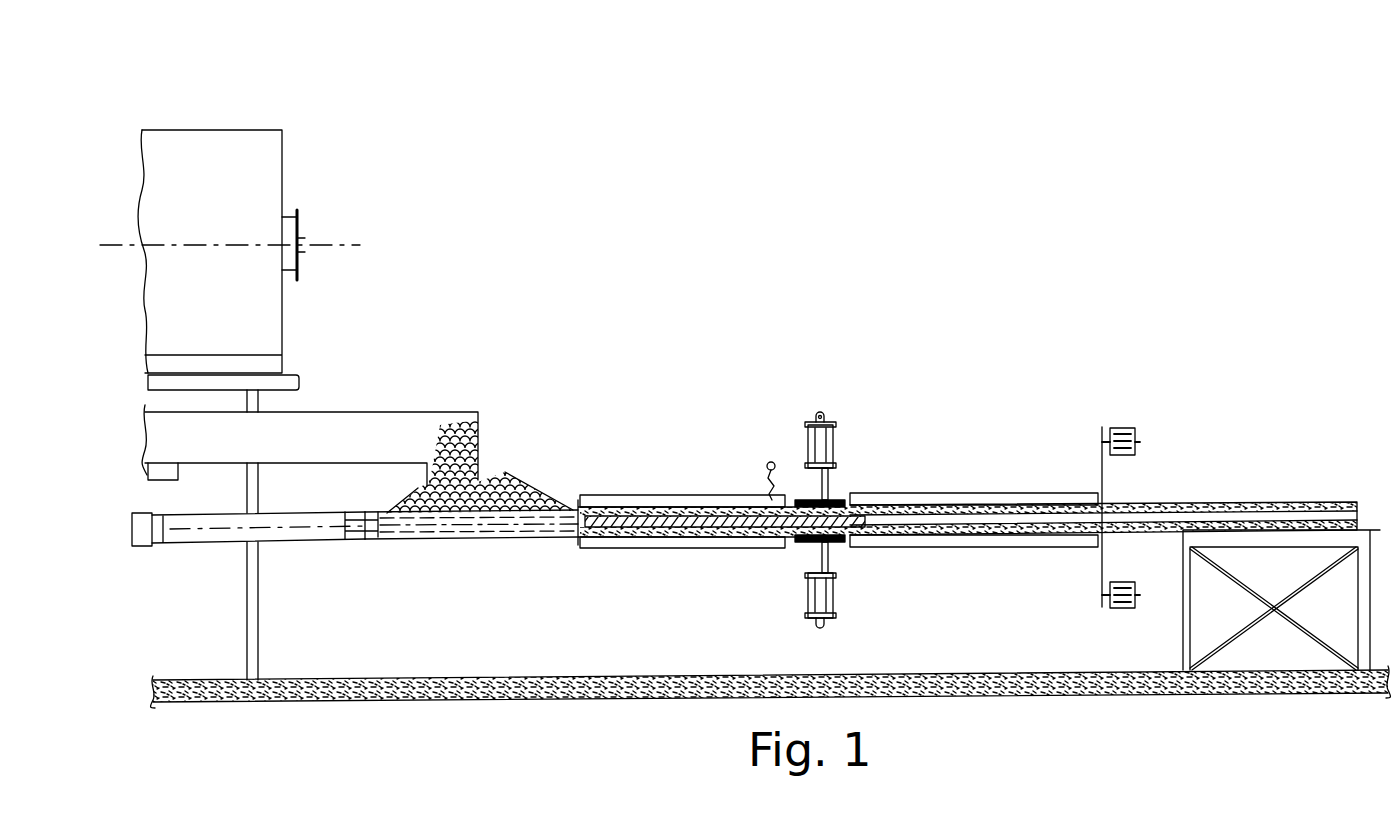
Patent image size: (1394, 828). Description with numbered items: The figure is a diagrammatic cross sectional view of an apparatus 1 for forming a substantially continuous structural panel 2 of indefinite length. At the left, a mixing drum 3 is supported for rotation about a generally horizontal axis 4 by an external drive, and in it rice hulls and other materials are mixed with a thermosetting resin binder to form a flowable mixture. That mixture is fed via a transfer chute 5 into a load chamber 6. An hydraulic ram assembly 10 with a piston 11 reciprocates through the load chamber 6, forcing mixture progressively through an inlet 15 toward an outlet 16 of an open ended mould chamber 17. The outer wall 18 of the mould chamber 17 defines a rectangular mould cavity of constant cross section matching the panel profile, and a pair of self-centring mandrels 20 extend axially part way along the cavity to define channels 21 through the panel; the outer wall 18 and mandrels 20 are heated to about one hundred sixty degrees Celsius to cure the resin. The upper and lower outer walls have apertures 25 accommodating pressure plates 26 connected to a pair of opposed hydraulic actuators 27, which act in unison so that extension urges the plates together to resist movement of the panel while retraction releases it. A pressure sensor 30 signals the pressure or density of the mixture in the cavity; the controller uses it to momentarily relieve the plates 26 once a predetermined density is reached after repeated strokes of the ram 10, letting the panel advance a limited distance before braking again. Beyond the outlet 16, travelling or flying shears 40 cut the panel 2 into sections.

The apparatus 1 is at (622, 358).
The structural panel 2 is at (1200, 502).
The mixing drum 3 is at (250, 130).
The horizontal axis 4 is at (324, 208).
The transfer chute 5 is at (375, 412).
The load chamber 6 is at (500, 490).
The hydraulic ram assembly 10 is at (315, 542).
The piston 11 is at (362, 540).
The inlet 15 is at (575, 513).
The outlet 16 is at (1104, 498).
The mould chamber 17 is at (973, 520).
The outer wall 18 is at (694, 495).
The self-centring mandrels 20 is at (860, 525).
The channels 21 is at (1273, 520).
The apertures 25 is at (850, 505).
The pressure plates 26 is at (800, 500).
The hydraulic actuators 27 is at (836, 423).
The pressure sensor 30 is at (768, 467).
The flying shears 40 is at (1101, 465).